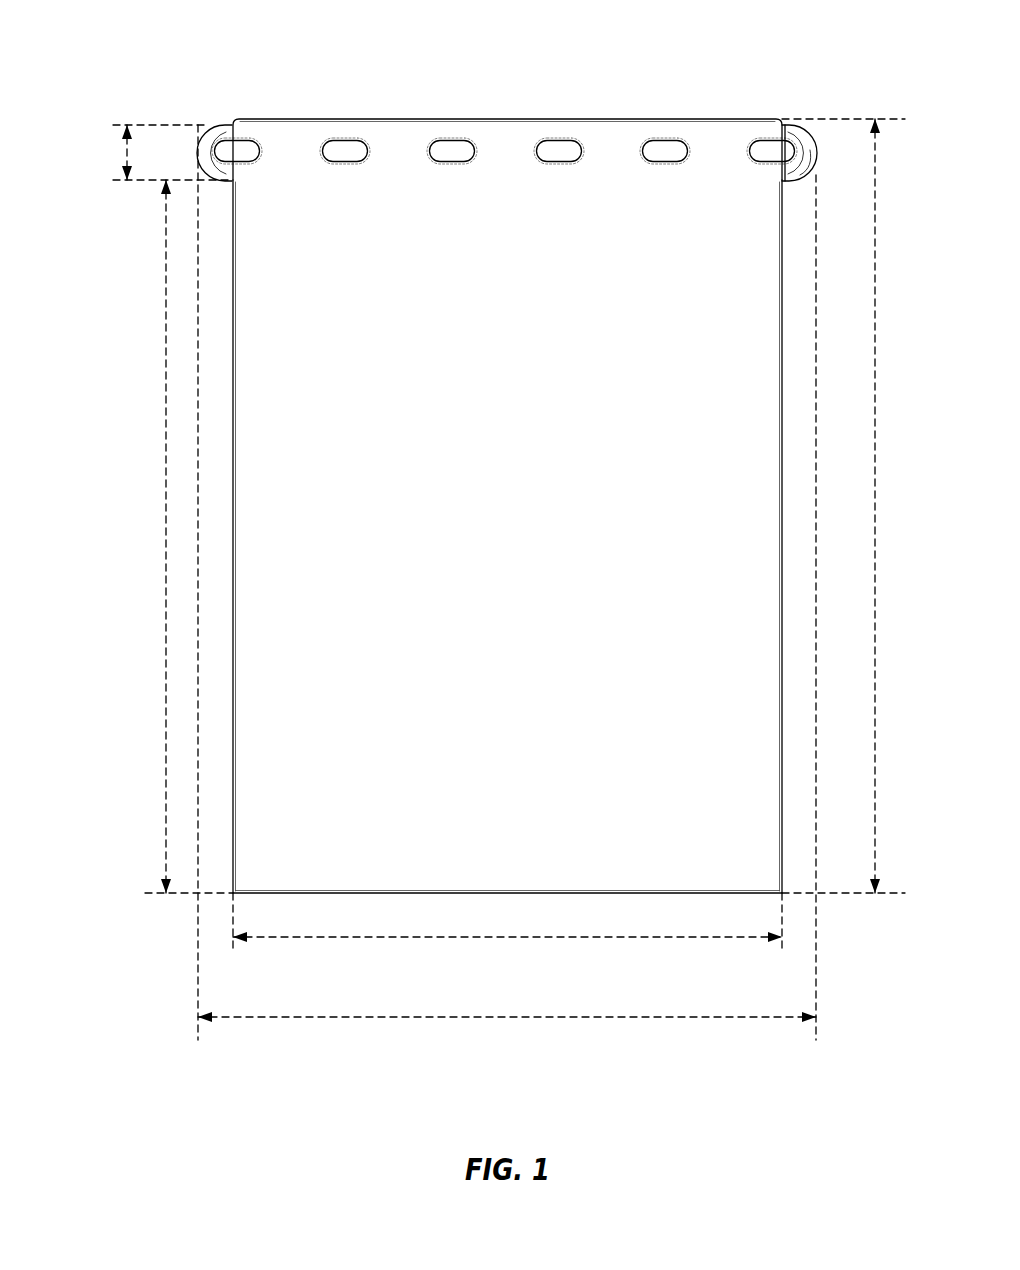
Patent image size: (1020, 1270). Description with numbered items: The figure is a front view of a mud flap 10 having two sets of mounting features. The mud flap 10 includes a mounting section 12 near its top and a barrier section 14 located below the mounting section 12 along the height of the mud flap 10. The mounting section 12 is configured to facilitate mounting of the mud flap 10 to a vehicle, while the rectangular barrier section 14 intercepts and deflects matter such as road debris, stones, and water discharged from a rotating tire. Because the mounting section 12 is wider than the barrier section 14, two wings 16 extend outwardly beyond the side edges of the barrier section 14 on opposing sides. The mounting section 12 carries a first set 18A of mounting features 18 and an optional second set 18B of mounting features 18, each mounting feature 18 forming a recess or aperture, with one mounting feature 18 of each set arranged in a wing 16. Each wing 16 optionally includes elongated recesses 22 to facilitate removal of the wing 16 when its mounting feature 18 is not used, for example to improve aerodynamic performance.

The mud flap 10 is at (335, 119).
The mounting section 12 is at (712, 150).
The barrier section 14 is at (764, 358).
The wing 16 is at (203, 142).
The mounting feature 18 is at (504, 153).
The first set of mounting features 18A is at (246, 140).
The second set of mounting features 18B is at (347, 163).
The elongated recess 22 is at (788, 142).